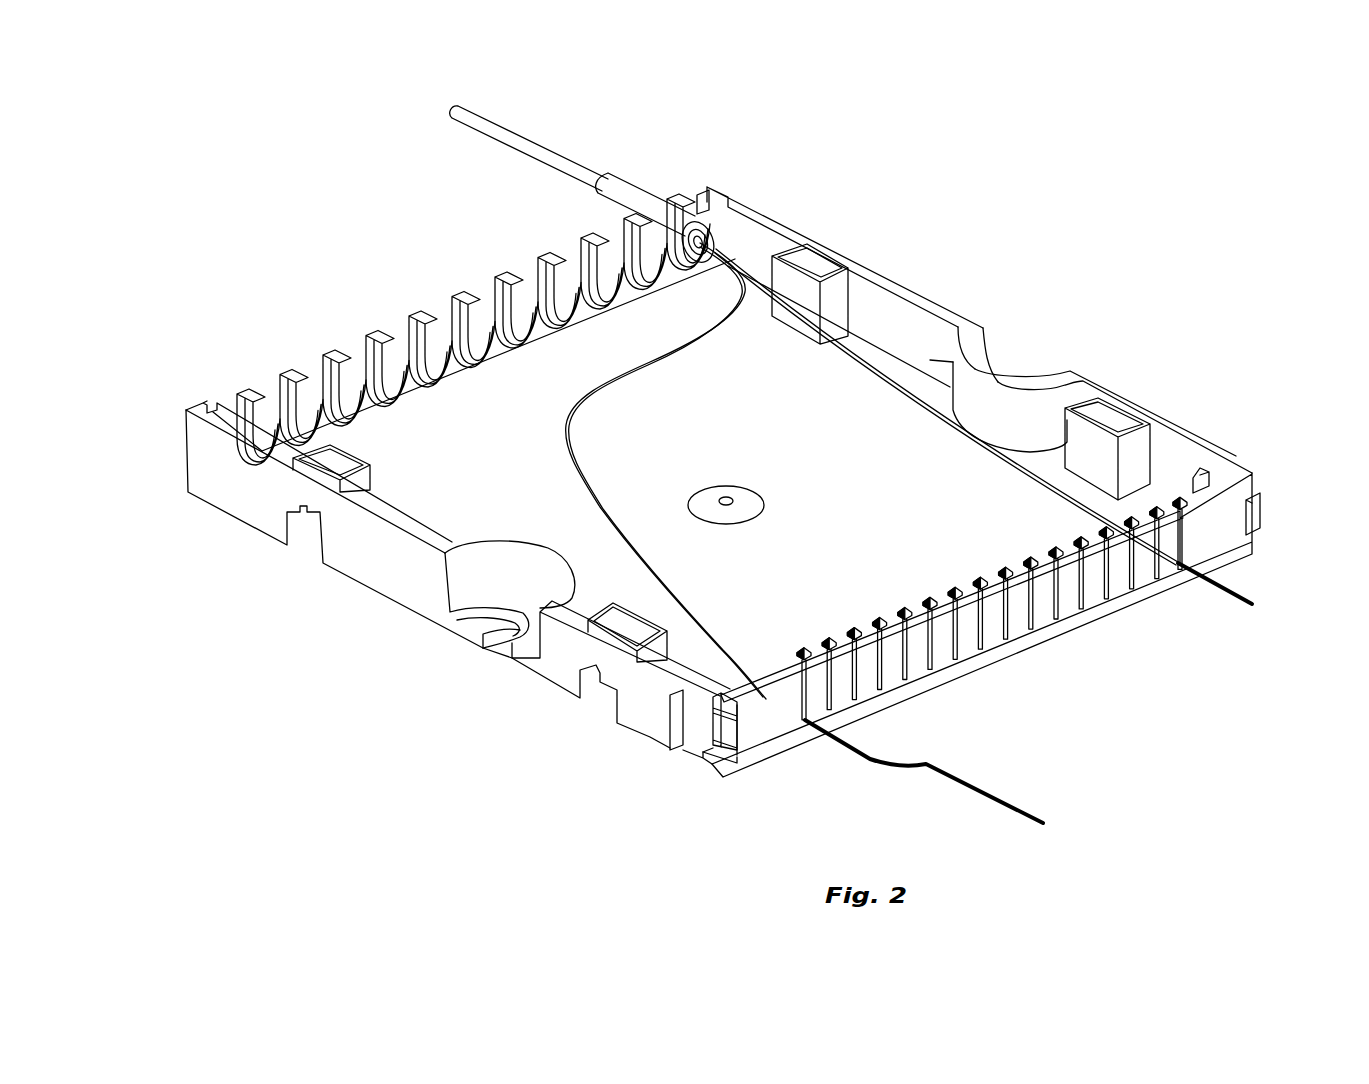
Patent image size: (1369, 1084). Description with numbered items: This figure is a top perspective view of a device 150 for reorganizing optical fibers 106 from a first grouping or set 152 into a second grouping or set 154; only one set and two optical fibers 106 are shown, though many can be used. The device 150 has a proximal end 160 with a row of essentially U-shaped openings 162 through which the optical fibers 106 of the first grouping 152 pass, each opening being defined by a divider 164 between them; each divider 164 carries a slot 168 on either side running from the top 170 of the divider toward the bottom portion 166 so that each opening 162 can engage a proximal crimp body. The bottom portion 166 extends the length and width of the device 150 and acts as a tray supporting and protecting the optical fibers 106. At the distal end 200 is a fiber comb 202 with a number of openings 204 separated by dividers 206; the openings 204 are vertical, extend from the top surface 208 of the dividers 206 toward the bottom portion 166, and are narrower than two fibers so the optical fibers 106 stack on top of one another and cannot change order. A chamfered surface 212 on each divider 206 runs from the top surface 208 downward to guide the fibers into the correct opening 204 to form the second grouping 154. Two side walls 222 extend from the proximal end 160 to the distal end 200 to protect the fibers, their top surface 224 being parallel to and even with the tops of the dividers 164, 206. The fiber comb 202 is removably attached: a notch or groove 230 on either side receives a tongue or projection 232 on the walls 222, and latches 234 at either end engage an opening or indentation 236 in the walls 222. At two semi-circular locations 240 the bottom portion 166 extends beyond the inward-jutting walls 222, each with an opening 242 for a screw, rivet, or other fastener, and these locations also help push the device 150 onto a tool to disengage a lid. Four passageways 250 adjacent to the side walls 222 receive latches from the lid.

The optical fibers 106 is at (568, 417).
The device 150 is at (1096, 217).
The first grouping or set 152 is at (690, 176).
The second grouping or set 154 is at (1236, 587).
The proximal end 160 is at (158, 441).
The openings 162 is at (393, 333).
The divider 164 is at (278, 372).
The bottom portion 166 is at (861, 511).
The slot 168 is at (540, 294).
The top 170 is at (455, 292).
The distal end 200 is at (731, 801).
The fiber comb 202 is at (778, 722).
The openings 204 is at (1033, 663).
The dividers 206 is at (993, 580).
The top surface 208 is at (857, 637).
The chamfered surface 212 is at (1053, 560).
The side walls 222 is at (367, 563).
The top surface 224 is at (982, 322).
The notch or groove 230 is at (743, 720).
The tongue or projection 232 is at (717, 727).
The latches 234 is at (1198, 483).
The opening or indentation 236 is at (663, 720).
The locations 240 is at (1024, 357).
The opening 242 is at (495, 648).
The passageways 250 is at (822, 262).